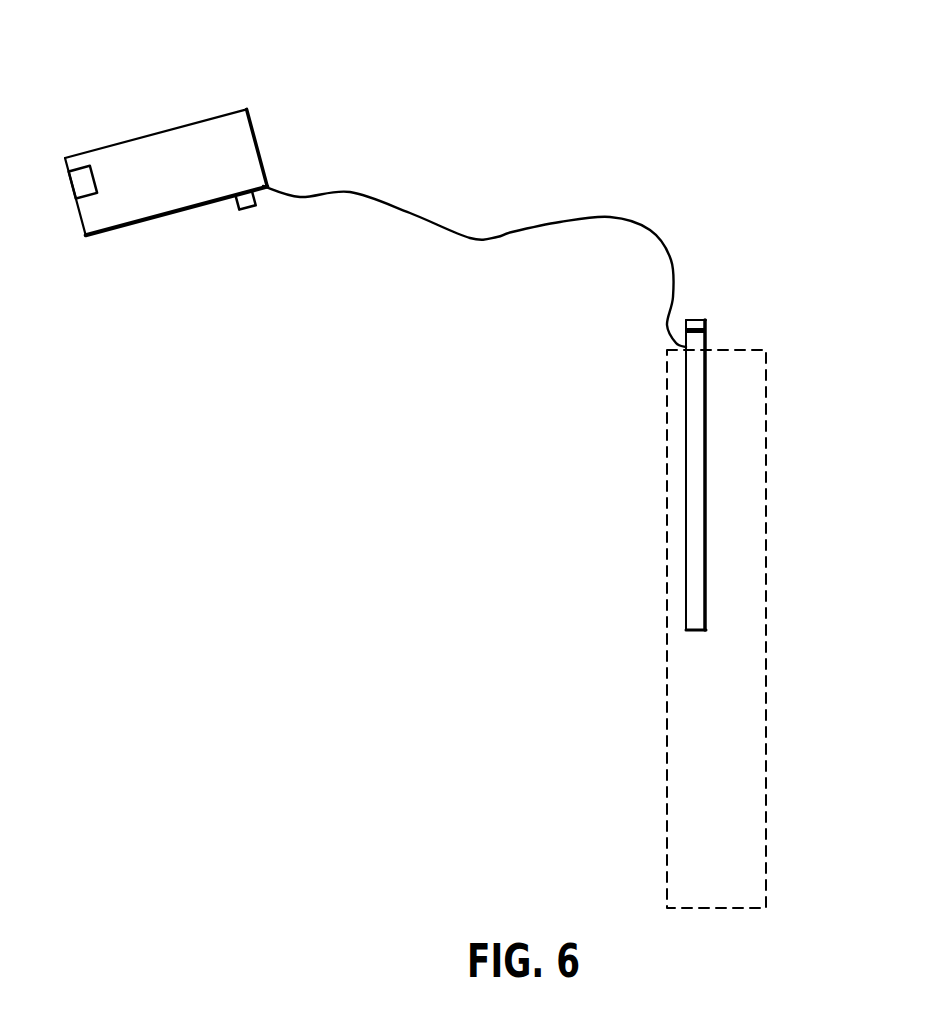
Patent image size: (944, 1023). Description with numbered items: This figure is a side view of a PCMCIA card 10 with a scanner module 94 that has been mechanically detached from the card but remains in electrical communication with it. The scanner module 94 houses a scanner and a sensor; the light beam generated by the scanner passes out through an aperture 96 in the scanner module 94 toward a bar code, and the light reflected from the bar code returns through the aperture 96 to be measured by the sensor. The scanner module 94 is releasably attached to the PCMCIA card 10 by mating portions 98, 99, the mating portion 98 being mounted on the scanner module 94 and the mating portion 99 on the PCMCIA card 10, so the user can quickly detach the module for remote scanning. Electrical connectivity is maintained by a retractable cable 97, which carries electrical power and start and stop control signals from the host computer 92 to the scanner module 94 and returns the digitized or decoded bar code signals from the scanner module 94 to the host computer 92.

The PCMCIA card 10 is at (706, 450).
The host computer 92 is at (766, 718).
The scanner module 94 is at (251, 138).
The aperture 96 is at (71, 186).
The retractable cable 97 is at (512, 232).
The mating portion 98 is at (706, 320).
The mating portion 99 is at (246, 207).